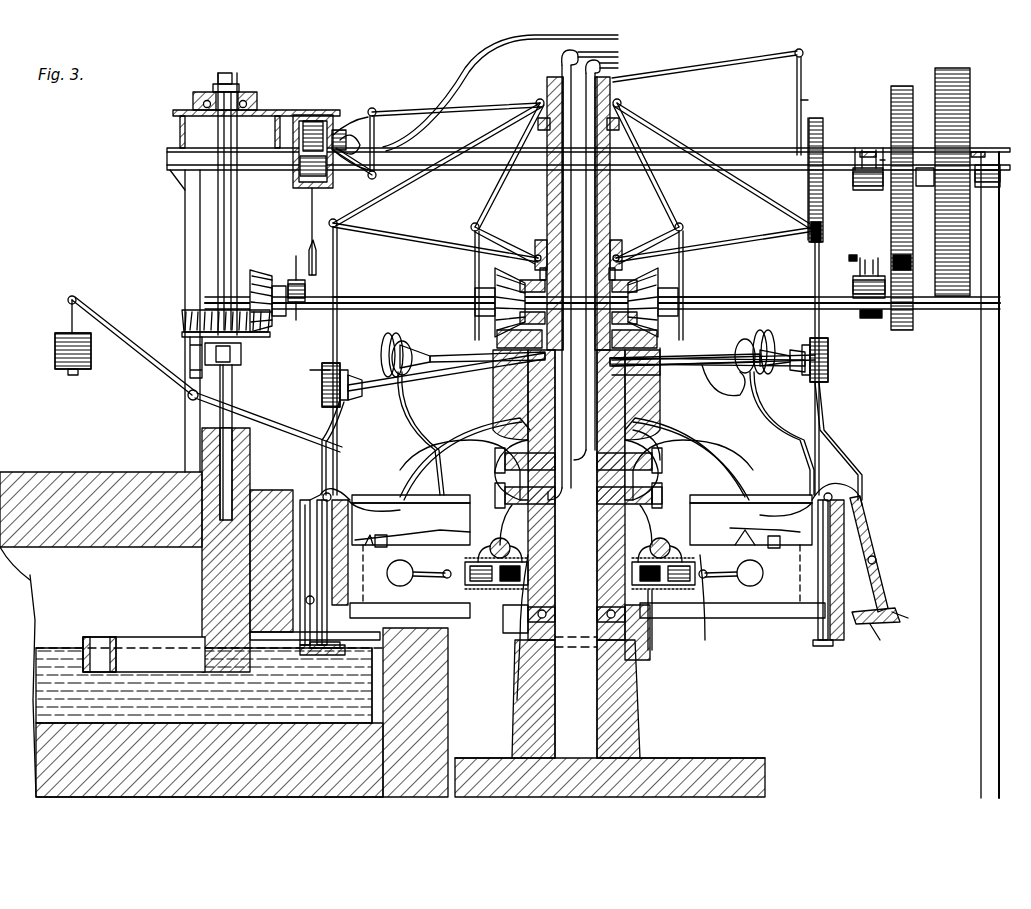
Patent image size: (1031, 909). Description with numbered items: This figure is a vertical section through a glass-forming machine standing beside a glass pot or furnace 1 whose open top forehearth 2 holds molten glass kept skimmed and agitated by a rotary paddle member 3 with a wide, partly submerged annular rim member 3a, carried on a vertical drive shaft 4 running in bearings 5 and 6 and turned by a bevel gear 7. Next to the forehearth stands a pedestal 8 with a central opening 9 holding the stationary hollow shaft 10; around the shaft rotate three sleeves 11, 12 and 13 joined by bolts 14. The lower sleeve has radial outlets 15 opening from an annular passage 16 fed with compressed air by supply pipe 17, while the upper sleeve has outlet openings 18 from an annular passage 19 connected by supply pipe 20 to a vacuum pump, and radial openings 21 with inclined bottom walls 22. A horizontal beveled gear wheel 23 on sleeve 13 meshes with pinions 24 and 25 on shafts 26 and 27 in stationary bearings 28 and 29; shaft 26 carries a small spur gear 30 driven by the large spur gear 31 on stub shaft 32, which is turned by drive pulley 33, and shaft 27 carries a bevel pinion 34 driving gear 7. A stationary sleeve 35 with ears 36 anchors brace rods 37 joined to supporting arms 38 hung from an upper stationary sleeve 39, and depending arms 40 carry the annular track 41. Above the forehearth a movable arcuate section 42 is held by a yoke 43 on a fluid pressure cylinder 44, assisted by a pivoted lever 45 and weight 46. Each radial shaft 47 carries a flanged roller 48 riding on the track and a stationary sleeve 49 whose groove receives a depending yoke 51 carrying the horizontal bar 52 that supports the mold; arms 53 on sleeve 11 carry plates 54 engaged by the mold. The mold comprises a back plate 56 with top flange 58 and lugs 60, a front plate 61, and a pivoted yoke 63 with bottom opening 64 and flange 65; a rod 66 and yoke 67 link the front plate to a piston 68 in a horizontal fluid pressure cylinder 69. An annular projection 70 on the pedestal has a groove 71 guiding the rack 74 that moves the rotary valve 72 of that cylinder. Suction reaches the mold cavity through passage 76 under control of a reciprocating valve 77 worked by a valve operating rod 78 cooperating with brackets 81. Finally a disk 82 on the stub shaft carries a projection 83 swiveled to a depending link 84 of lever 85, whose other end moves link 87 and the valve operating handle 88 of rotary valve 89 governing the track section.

The glass pot or furnace 1 is at (96, 478).
The forehearth 2 is at (440, 674).
The rotary paddle member 3 is at (148, 636).
The annular rim member 3a is at (100, 636).
The drive shaft 4 is at (233, 396).
The bearing 5 is at (242, 355).
The bearing 6 is at (244, 92).
The bevel gear 7 is at (182, 322).
The pedestal 8 is at (630, 757).
The vertical central opening 9 is at (595, 716).
The hollow shaft 10 is at (590, 690).
The lower sleeve 11 is at (615, 552).
The sleeve 12 is at (655, 480).
The sleeve 13 is at (571, 480).
The fastening bolts 14 is at (495, 462).
The radial outlets 15 is at (504, 522).
The annular passage 16 is at (660, 494).
The supply pipe 17 is at (622, 46).
The outlet openings 18 is at (525, 435).
The annular passage 19 is at (645, 425).
The supply pipe 20 is at (622, 65).
The radial openings 21 is at (665, 368).
The inclined bottom walls 22 is at (665, 380).
The horizontal beveled gear wheel 23 is at (660, 335).
The beveled pinion 24 is at (680, 285).
The beveled pinion 25 is at (480, 275).
The shaft 26 is at (775, 296).
The shaft 27 is at (412, 296).
The stationary bearings 28 is at (527, 290).
The stationary bearings 29 is at (296, 322).
The small spur gear 30 is at (908, 333).
The large spur gear 31 is at (890, 95).
The stub shaft 32 is at (1000, 187).
The drive pulley 33 is at (964, 112).
The bevel pinion 34 is at (260, 270).
The stationary sleeve 35 is at (612, 245).
The radially extending ears 36 is at (542, 252).
The brace rods 37 is at (436, 240).
The supporting arms 38 is at (574, 166).
The stationary sleeve 39 is at (620, 98).
The depending arms 40 is at (338, 270).
The annular track 41 is at (760, 400).
The movable arcuate section 42 is at (345, 432).
The yoke 43 is at (305, 368).
The fluid pressure cylinder 44 is at (296, 186).
The pivoted lever 45 is at (275, 433).
The weight 46 is at (90, 360).
The radially extending shaft 47 is at (460, 356).
The flanged wheel or roller 48 is at (400, 338).
The stationary sleeve 49 is at (360, 383).
The depending yoke 51 is at (430, 450).
The horizontal bar 52 is at (428, 465).
The radially extending arms 53 is at (416, 604).
The plates 54 is at (340, 606).
The back plate 56 is at (845, 636).
The top flange 58 is at (312, 520).
The lugs 60 is at (452, 495).
The front plate 61 is at (300, 640).
The yoke 63 is at (907, 617).
The elongated opening 64 is at (883, 638).
The flange 65 is at (898, 606).
The rod 66 is at (308, 604).
The yoke 67 is at (430, 577).
The piston 68 is at (517, 660).
The fluid pressure cylinder 69 is at (490, 590).
The annular projection 70 is at (652, 655).
The groove 71 is at (661, 620).
The rotary valve 72 is at (495, 538).
The rack 74 is at (658, 596).
The passage 76 is at (320, 530).
The reciprocating valve 77 is at (387, 545).
The valve operating rod 78 is at (378, 535).
The brackets 81 is at (410, 530).
The disk 82 is at (824, 125).
The projection 83 is at (812, 118).
The depending link 84 is at (804, 55).
The lever 85 is at (746, 58).
The depending link 87 is at (456, 117).
The valve operating handle 88 is at (365, 178).
The rotary valve 89 is at (345, 135).